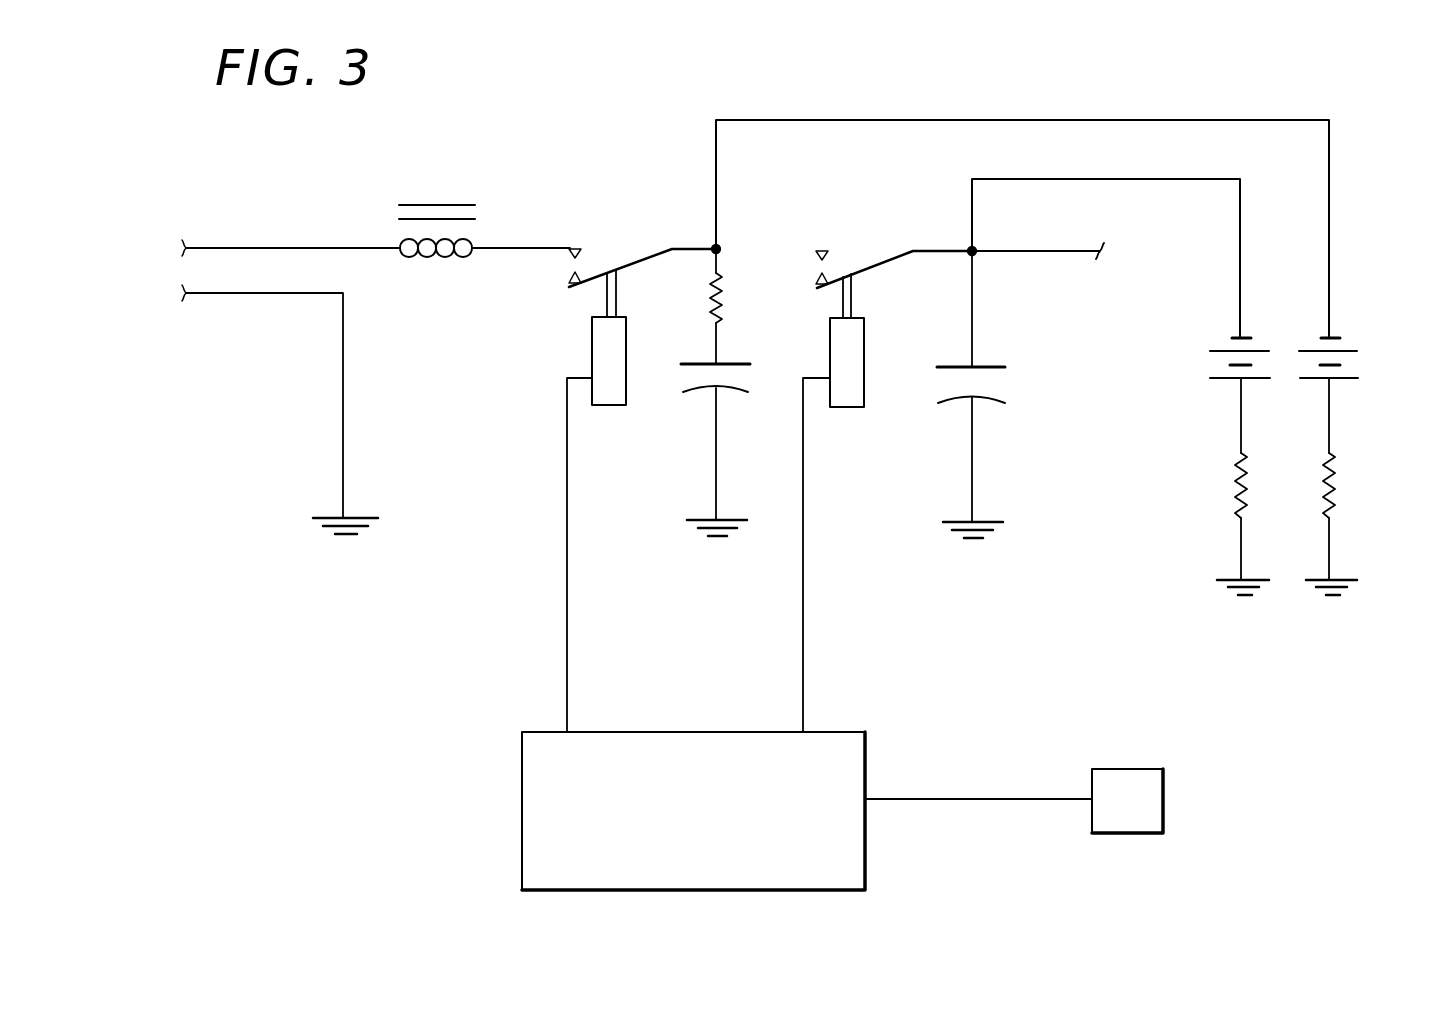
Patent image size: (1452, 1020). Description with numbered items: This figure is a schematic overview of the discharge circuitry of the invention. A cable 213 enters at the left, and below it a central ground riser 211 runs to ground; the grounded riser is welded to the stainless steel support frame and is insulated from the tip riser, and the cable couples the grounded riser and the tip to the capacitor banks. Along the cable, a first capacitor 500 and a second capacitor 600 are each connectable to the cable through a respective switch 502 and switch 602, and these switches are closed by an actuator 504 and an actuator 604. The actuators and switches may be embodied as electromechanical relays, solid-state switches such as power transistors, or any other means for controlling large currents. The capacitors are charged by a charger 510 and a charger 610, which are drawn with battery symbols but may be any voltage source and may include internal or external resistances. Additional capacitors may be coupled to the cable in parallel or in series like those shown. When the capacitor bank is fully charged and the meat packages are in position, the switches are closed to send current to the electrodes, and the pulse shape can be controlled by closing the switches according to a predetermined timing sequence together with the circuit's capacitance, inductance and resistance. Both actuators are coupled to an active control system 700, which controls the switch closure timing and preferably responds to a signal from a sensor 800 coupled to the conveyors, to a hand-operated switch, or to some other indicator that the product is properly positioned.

The cable 213 is at (220, 246).
The central ground riser 211 is at (206, 295).
The switch 502 is at (615, 247).
The actuator 504 is at (592, 335).
The first capacitor 500 is at (676, 385).
The switch 602 is at (842, 250).
The actuator 604 is at (852, 408).
The second capacitor 600 is at (1014, 386).
The charger 610 is at (1216, 337).
The charger 510 is at (1351, 338).
The active control system 700 is at (522, 745).
The sensor 800 is at (1139, 769).